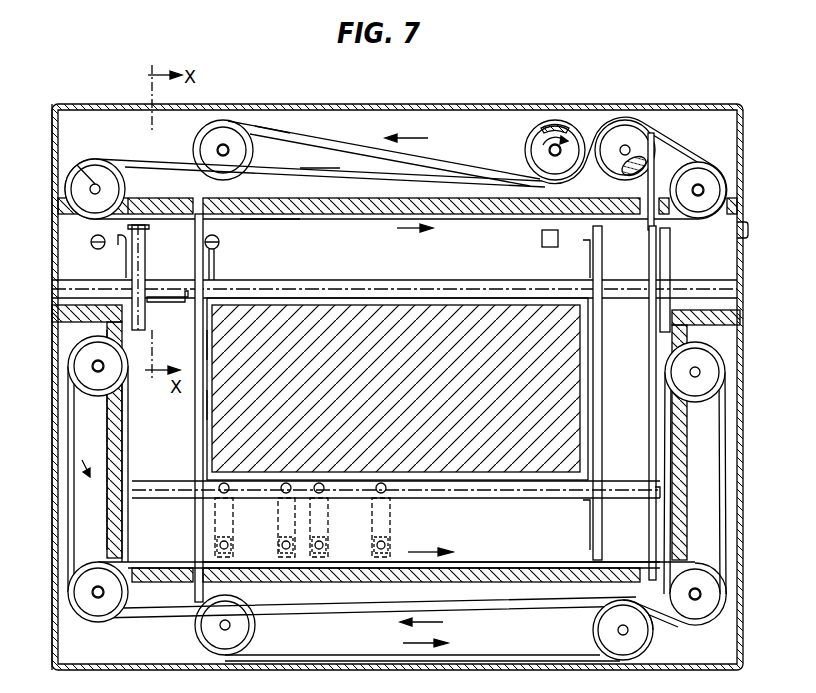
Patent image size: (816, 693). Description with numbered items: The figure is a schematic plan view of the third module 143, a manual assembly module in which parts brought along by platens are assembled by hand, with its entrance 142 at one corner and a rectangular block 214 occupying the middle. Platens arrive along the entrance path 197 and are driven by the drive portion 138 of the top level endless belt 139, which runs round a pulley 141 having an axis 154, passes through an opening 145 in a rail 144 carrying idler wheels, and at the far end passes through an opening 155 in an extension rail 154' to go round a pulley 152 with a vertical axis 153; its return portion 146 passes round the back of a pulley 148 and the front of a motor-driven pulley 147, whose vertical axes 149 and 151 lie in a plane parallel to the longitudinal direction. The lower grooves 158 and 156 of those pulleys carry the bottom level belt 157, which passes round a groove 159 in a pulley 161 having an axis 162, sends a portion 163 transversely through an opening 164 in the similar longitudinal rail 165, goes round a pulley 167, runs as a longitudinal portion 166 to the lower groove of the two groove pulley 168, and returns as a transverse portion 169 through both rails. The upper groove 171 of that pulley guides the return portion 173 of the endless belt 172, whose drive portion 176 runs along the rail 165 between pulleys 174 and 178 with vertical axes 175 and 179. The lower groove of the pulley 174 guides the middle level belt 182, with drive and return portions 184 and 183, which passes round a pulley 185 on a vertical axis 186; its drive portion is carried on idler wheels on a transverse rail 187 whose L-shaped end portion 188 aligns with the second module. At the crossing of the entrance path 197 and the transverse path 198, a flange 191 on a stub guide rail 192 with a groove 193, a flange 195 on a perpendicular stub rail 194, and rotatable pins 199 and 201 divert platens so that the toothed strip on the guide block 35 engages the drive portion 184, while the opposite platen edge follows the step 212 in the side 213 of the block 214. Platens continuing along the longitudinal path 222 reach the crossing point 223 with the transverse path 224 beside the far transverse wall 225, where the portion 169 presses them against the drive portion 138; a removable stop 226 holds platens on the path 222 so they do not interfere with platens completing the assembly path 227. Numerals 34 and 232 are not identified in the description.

The cassette 34 is at (384, 524).
The guide block 35 is at (222, 523).
The drive portion 138 is at (270, 217).
The endless belt 139 is at (396, 168).
The pulley 141 is at (92, 172).
The entrance 142 is at (58, 244).
The third module 143 is at (350, 96).
The rail 144 is at (305, 198).
The opening 145 is at (128, 204).
The return portion 146 is at (327, 167).
The pulley 147 is at (535, 140).
The pulley 148 is at (641, 128).
The vertical axis 149 is at (547, 155).
The vertical axis 151 is at (622, 171).
The pulley 152 is at (706, 178).
The vertical axis 153 is at (702, 189).
The axis 154 is at (78, 160).
The extension rail 154' is at (759, 234).
The opening 155 is at (742, 206).
The lower groove 156 is at (640, 183).
The endless belt 157 is at (377, 135).
The lower groove 158 is at (562, 125).
The groove 159 is at (263, 126).
The pulley 161 is at (210, 138).
The axis 162 is at (229, 150).
The portion 163 is at (203, 267).
The opening 164 is at (188, 583).
The longitudinal rail 165 is at (310, 583).
The longitudinal portion 166 is at (300, 655).
The pulley 167 is at (244, 636).
The two groove pulley 168 is at (603, 633).
The transverse portion 169 is at (648, 438).
The upper groove 171 is at (596, 625).
The endless belt 172 is at (378, 606).
The return portion 173 is at (466, 620).
The pulley 174 is at (96, 599).
The vertical axis 175 is at (67, 591).
The drive portion 176 is at (505, 561).
The pulley 178 is at (700, 610).
The vertical axis 179 is at (695, 588).
The endless belt 182 is at (90, 480).
The return portion 183 is at (68, 444).
The drive portion 184 is at (130, 443).
The pulley 185 is at (90, 382).
The vertical axis 186 is at (92, 369).
The transverse rail 187 is at (107, 445).
The portion 188 is at (66, 322).
The flange 191 is at (185, 303).
The guide rail 192 is at (86, 280).
The groove 193 is at (62, 290).
The guide rail 194 is at (146, 263).
The flange 195 is at (149, 232).
The entrance path 197 is at (69, 229).
The transverse path 198 is at (174, 433).
The pin 199 is at (92, 247).
The pin 201 is at (219, 240).
The step 212 is at (210, 400).
The side 213 is at (210, 348).
The rectangular block 214 is at (326, 306).
The longitudinal path 222 is at (413, 238).
The crossing point 223 is at (610, 393).
The transverse path 224 is at (627, 358).
The far transverse wall 225 is at (742, 362).
The removable stop 226 is at (541, 243).
The longitudinal path 227 is at (422, 642).
The guide rail 232 is at (396, 518).